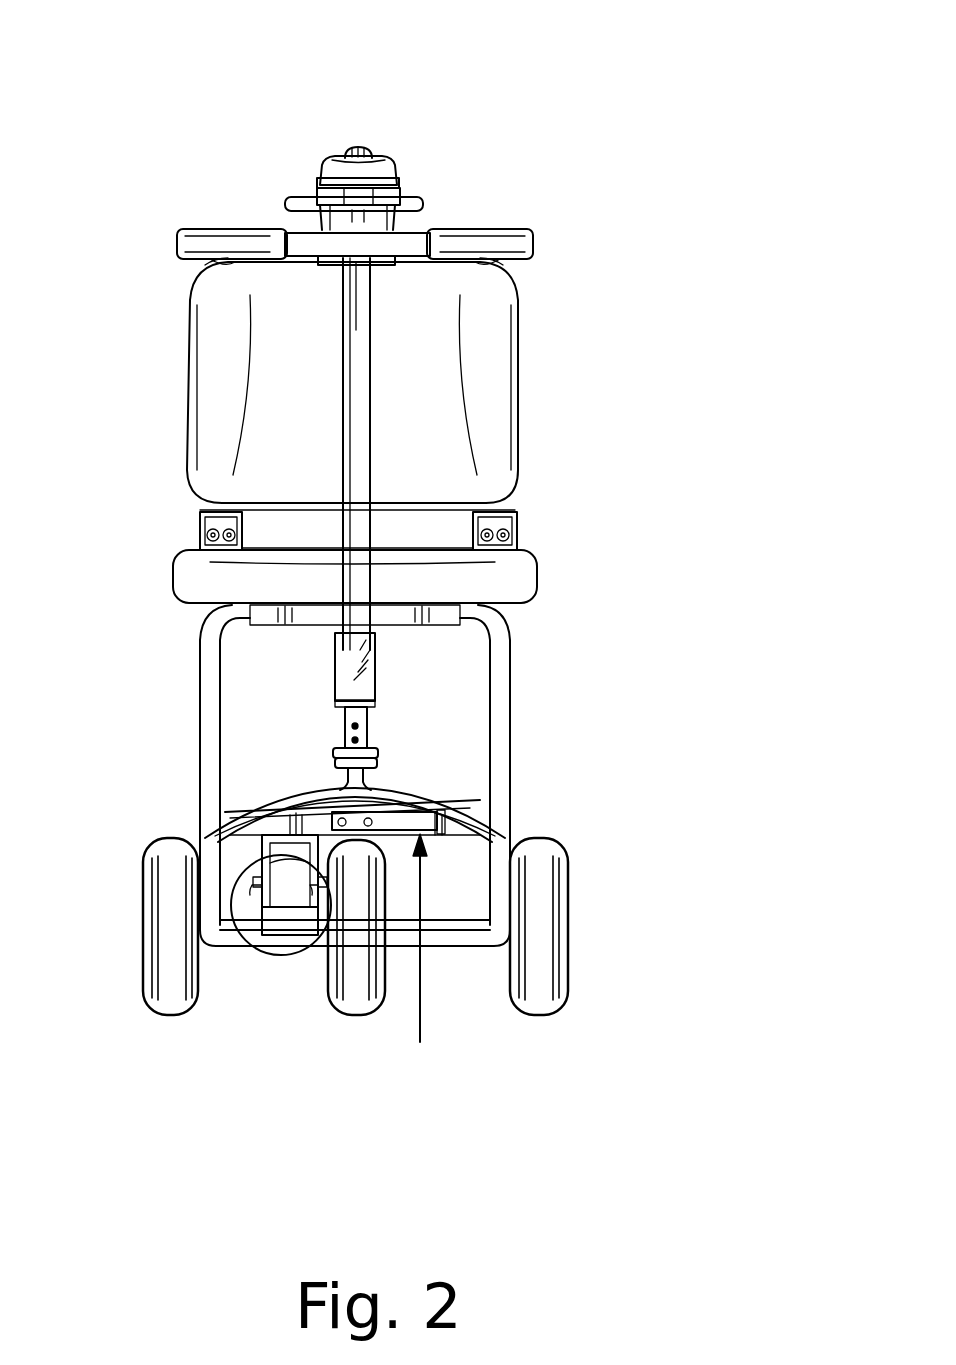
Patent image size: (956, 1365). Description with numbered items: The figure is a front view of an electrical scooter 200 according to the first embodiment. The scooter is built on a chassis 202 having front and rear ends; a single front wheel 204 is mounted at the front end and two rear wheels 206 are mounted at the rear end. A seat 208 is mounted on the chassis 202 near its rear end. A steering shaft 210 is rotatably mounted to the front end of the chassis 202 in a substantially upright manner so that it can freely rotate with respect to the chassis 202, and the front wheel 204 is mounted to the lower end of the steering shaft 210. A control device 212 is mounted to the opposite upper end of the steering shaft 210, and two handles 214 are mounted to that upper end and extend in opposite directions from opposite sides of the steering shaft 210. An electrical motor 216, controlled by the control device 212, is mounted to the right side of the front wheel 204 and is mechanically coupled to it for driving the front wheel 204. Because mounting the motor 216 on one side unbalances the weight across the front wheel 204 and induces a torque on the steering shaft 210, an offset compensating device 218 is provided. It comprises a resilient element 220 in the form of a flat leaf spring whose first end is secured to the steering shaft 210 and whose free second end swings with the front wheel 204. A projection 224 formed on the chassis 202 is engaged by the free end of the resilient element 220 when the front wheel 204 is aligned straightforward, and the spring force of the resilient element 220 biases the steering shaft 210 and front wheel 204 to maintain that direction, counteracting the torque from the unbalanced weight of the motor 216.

The electrical scooter 200 is at (288, 74).
The chassis 202 is at (465, 945).
The front wheel 204 is at (347, 1000).
The rear wheels 206 is at (165, 988).
The seat 208 is at (495, 361).
The steering shaft 210 is at (355, 448).
The control device 212 is at (372, 162).
The handles 214 is at (518, 230).
The electrical motor 216 is at (248, 948).
The offset compensating device 218 is at (418, 962).
The resilient element 220 is at (403, 810).
The projection 224 is at (447, 810).